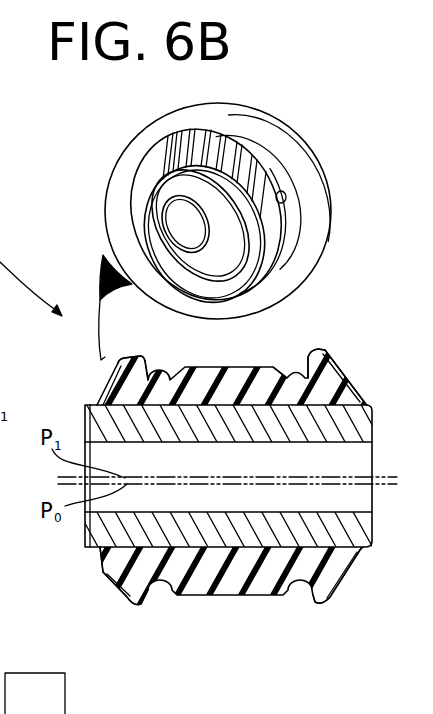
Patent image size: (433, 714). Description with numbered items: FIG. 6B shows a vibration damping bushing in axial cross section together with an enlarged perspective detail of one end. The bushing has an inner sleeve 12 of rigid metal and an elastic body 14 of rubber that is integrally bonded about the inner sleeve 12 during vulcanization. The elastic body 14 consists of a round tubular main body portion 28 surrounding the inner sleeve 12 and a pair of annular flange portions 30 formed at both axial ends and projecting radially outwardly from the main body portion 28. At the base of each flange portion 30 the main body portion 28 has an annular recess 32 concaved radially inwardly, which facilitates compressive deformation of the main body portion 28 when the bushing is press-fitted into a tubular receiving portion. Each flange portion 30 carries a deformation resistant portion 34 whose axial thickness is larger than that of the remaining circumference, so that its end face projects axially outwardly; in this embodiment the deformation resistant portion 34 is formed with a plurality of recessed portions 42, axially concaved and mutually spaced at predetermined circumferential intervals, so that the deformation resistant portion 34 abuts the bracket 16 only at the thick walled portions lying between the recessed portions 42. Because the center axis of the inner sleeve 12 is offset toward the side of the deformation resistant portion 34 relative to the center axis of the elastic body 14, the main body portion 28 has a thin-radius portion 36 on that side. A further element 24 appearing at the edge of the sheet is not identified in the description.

The inner sleeve 12 is at (157, 218).
The elastic body 14 is at (293, 260).
The bracket 16 is at (95, 713).
The member 24 is at (143, 713).
The main body portion 28 is at (283, 140).
The annular flange portions 30 is at (152, 158).
The annular recesses 32 is at (287, 206).
The deformation resistant portion 34 is at (207, 122).
The thin-radius portion 36 is at (243, 120).
The recessed portions 42 is at (176, 126).